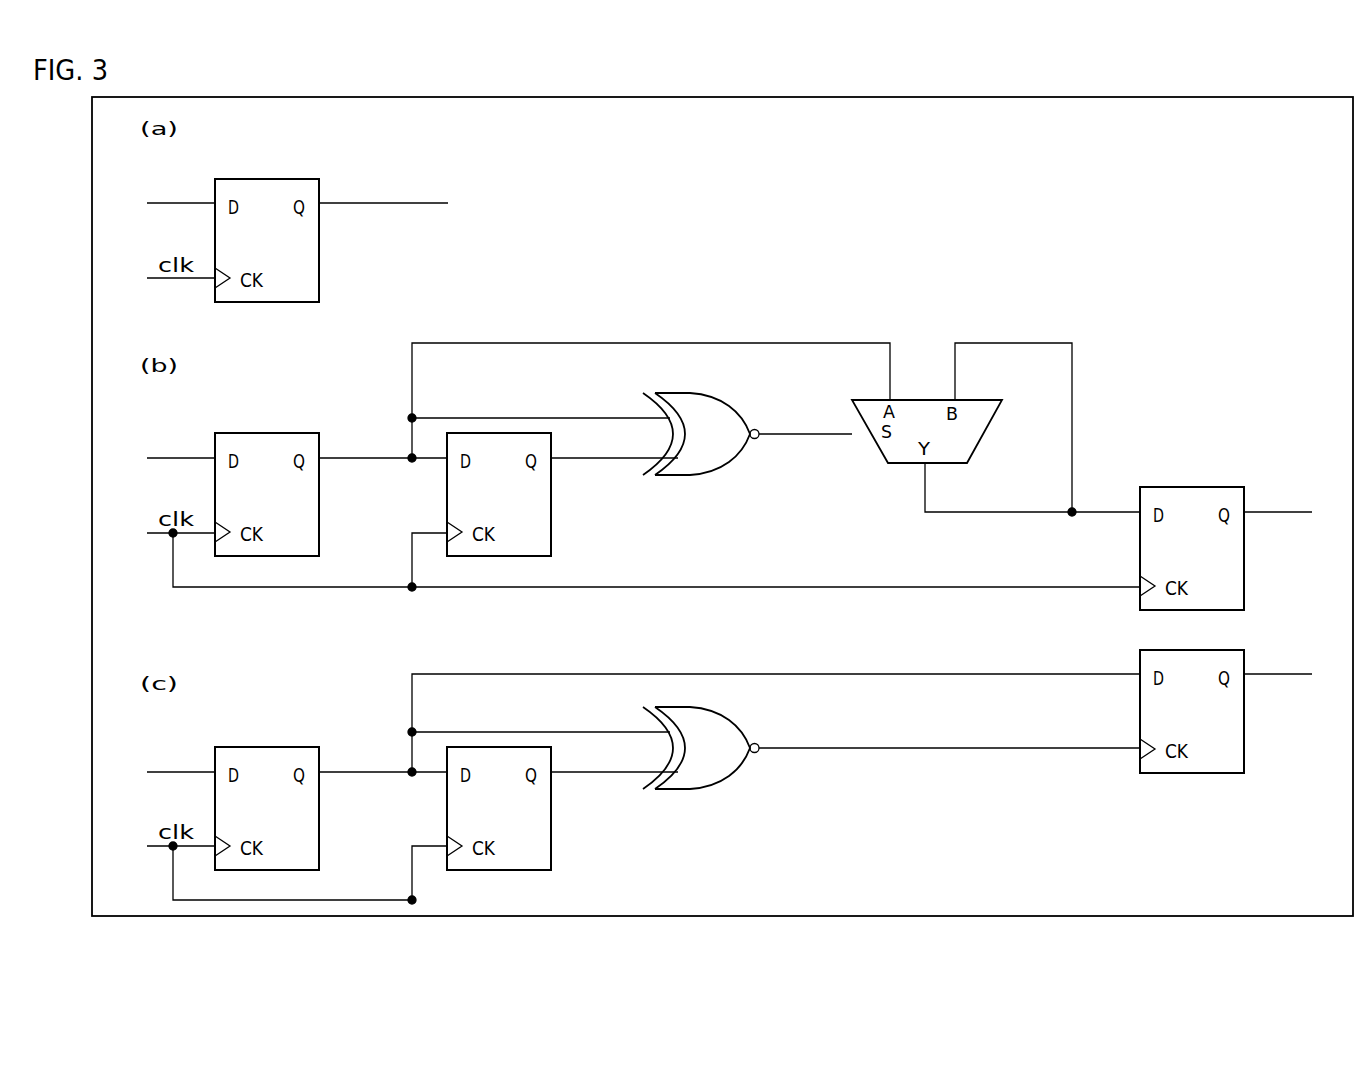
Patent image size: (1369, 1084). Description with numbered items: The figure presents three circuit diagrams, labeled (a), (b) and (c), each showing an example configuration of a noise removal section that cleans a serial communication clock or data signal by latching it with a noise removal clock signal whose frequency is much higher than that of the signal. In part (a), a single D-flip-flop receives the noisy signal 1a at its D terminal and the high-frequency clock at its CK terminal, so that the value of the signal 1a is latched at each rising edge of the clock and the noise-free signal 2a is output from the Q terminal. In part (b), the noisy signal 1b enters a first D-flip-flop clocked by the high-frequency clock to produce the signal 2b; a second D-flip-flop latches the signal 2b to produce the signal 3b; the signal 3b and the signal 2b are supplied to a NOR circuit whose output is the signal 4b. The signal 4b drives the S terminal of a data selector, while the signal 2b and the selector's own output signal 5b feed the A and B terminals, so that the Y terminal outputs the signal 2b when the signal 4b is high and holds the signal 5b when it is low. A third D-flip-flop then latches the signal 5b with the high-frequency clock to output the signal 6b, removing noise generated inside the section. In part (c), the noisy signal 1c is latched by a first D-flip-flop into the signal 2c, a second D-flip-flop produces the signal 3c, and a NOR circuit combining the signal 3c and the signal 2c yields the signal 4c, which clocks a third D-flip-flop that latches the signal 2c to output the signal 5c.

The signal 1a is at (156, 190).
The signal 2a is at (383, 190).
The signal 1b is at (156, 445).
The signal 2b is at (604, 402).
The signal 3b is at (614, 445).
The signal 4b is at (805, 411).
The signal 5b is at (1032, 429).
The signal 6b is at (1293, 499).
The signal 1c is at (156, 759).
The signal 2c is at (729, 725).
The signal 3c is at (614, 759).
The signal 4c is at (949, 738).
The signal 5c is at (1293, 662).